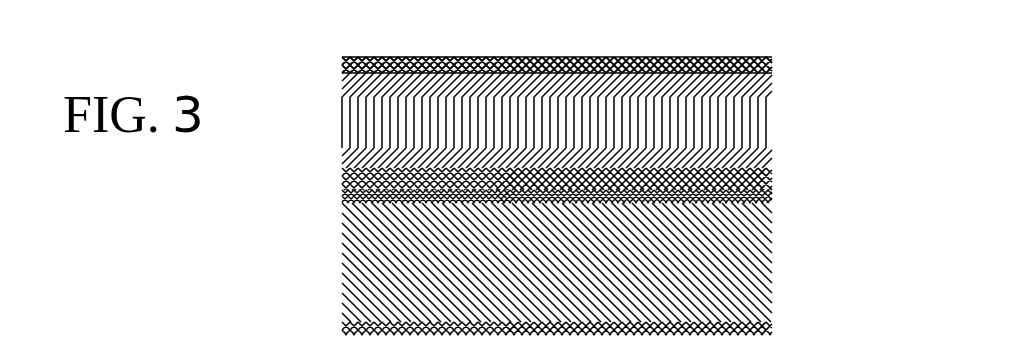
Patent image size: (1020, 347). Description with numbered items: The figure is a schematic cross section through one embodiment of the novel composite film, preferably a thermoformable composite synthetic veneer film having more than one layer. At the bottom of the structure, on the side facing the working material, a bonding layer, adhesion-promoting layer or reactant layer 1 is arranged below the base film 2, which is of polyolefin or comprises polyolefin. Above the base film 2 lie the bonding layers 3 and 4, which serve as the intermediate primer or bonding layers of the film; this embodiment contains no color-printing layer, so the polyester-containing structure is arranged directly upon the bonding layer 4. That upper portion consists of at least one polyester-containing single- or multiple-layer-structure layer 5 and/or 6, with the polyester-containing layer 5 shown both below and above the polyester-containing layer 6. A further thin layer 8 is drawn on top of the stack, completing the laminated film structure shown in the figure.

The bonding layer 1 is at (772, 322).
The base film 2 is at (772, 275).
The bonding layer 3 is at (772, 192).
The bonding layer 4 is at (772, 177).
The polyester-containing layer 5 is at (770, 80).
The polyester-containing layer 6 is at (770, 117).
The protective overcoat layer 8 is at (770, 65).